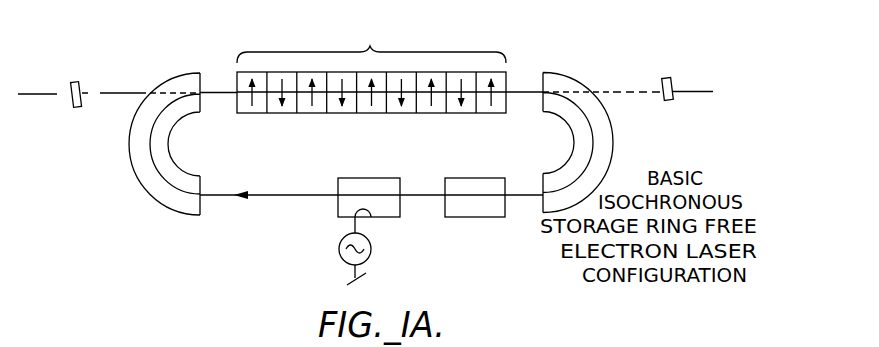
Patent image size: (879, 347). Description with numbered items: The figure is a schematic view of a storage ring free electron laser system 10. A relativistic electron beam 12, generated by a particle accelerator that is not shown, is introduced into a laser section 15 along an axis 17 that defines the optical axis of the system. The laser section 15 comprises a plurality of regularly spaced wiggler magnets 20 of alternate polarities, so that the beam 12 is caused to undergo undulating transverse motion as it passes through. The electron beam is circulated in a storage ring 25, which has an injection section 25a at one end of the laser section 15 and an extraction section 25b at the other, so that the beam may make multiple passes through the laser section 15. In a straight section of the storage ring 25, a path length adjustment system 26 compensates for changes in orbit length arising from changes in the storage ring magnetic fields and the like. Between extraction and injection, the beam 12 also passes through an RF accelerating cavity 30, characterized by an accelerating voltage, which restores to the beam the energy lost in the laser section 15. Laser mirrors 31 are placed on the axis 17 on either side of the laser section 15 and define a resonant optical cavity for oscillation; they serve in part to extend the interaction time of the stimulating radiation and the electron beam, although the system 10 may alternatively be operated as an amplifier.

The storage ring free electron laser system 10 is at (650, 37).
The relativistic electron beam 12 is at (278, 197).
The laser section 15 is at (370, 47).
The axis 17 is at (622, 90).
The wiggler magnets 20 is at (253, 113).
The storage ring 25 is at (220, 206).
The injection section 25a is at (129, 152).
The extraction section 25b is at (614, 143).
The path length adjustment system 26 is at (500, 217).
The RF accelerating cavity 30 is at (393, 217).
The laser mirrors 31 is at (77, 82).